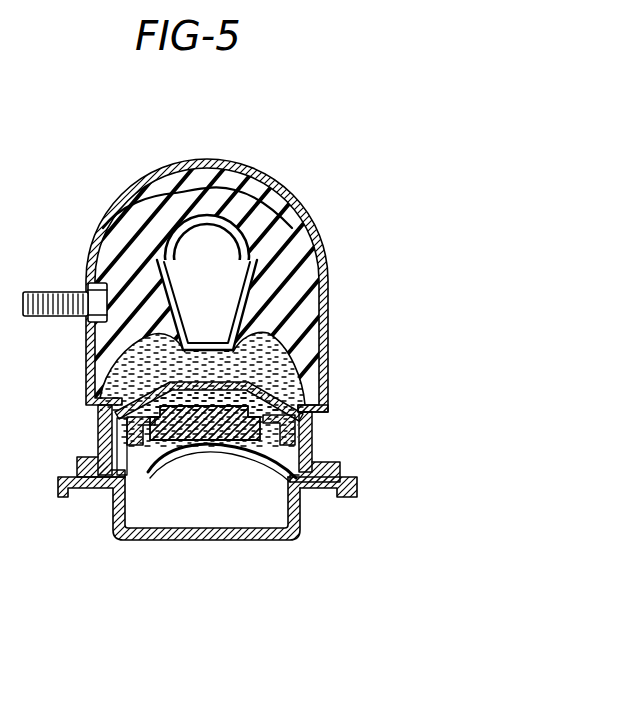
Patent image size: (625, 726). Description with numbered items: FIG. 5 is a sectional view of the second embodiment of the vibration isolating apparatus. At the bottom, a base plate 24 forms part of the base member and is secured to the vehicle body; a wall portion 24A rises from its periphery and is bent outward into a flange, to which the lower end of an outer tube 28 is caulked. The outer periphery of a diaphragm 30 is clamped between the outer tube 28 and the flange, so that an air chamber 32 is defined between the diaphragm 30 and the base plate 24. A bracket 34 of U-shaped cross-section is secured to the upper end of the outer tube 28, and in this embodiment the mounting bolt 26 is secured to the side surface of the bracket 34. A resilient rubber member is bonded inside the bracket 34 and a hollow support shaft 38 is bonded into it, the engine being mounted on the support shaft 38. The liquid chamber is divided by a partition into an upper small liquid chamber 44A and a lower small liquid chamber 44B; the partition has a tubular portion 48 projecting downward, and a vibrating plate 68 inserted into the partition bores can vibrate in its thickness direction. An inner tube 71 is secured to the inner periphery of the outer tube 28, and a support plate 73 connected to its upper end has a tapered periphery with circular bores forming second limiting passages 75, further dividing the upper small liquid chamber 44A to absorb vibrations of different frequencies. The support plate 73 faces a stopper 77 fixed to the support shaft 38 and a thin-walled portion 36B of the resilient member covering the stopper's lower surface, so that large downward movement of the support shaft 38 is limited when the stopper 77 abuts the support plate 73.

The base plate 24 is at (165, 535).
The wall portion 24A is at (300, 508).
The mounting bolt 26 is at (60, 291).
The outer tube 28 is at (312, 433).
The diaphragm 30 is at (262, 470).
The air chamber 32 is at (220, 488).
The bracket 34 is at (82, 334).
The thin-walled portion 36B is at (220, 352).
The support shaft 38 is at (253, 222).
The upper small liquid chamber 44A is at (209, 389).
The lower small liquid chamber 44B is at (150, 465).
The tubular portion 48 is at (110, 440).
The vibrating plate 68 is at (201, 432).
The inner tube 71 is at (313, 441).
The support plate 73 is at (166, 395).
The second limiting passages 75 is at (287, 377).
The stopper 77 is at (257, 297).